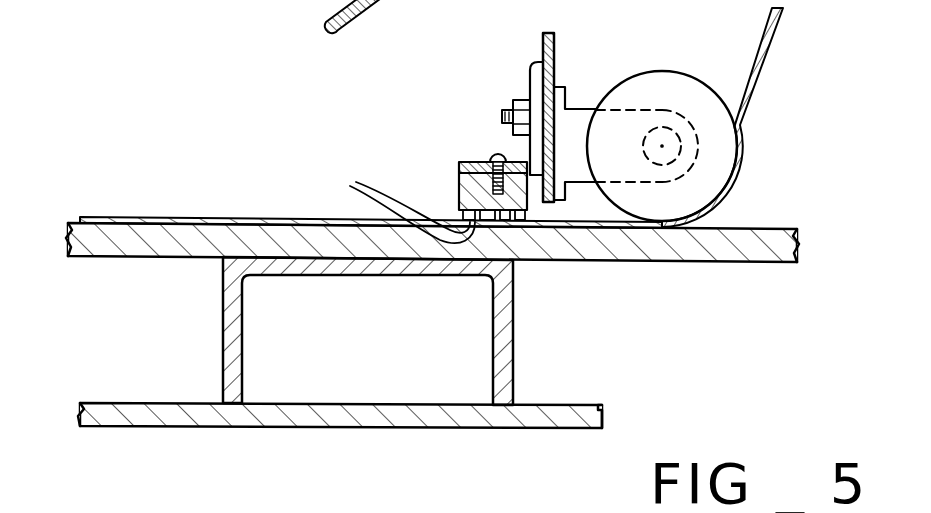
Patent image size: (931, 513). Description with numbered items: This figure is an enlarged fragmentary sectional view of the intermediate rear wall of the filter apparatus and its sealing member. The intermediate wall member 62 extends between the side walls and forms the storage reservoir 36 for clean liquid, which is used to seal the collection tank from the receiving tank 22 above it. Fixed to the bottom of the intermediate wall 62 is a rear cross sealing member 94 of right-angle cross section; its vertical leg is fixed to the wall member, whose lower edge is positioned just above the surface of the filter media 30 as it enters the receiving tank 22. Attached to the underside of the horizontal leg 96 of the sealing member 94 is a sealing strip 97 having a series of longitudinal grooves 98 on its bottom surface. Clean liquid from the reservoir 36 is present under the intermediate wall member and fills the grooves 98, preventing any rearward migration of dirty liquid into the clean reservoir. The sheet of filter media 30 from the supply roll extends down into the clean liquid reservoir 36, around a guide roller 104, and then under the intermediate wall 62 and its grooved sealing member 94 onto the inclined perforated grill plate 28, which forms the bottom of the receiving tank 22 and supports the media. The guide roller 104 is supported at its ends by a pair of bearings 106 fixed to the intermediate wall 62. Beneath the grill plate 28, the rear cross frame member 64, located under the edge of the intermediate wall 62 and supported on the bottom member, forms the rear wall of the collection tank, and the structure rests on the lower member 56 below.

The receiving tank 22 is at (268, 126).
The inclined perforated grill plate 28 is at (130, 236).
The filter media 30 is at (310, 1).
The storage reservoir 36 is at (682, 24).
The bottom flange 56 is at (376, 428).
The intermediate wall member 62 is at (541, 40).
The rear cross frame member 64 is at (512, 342).
The rear cross sealing member 94 is at (530, 78).
The horizontal leg 96 is at (459, 166).
The sealing strip 97 is at (459, 196).
The longitudinal grooves 98 is at (396, 197).
The guide roller 104 is at (708, 173).
The bearings 106 is at (578, 108).